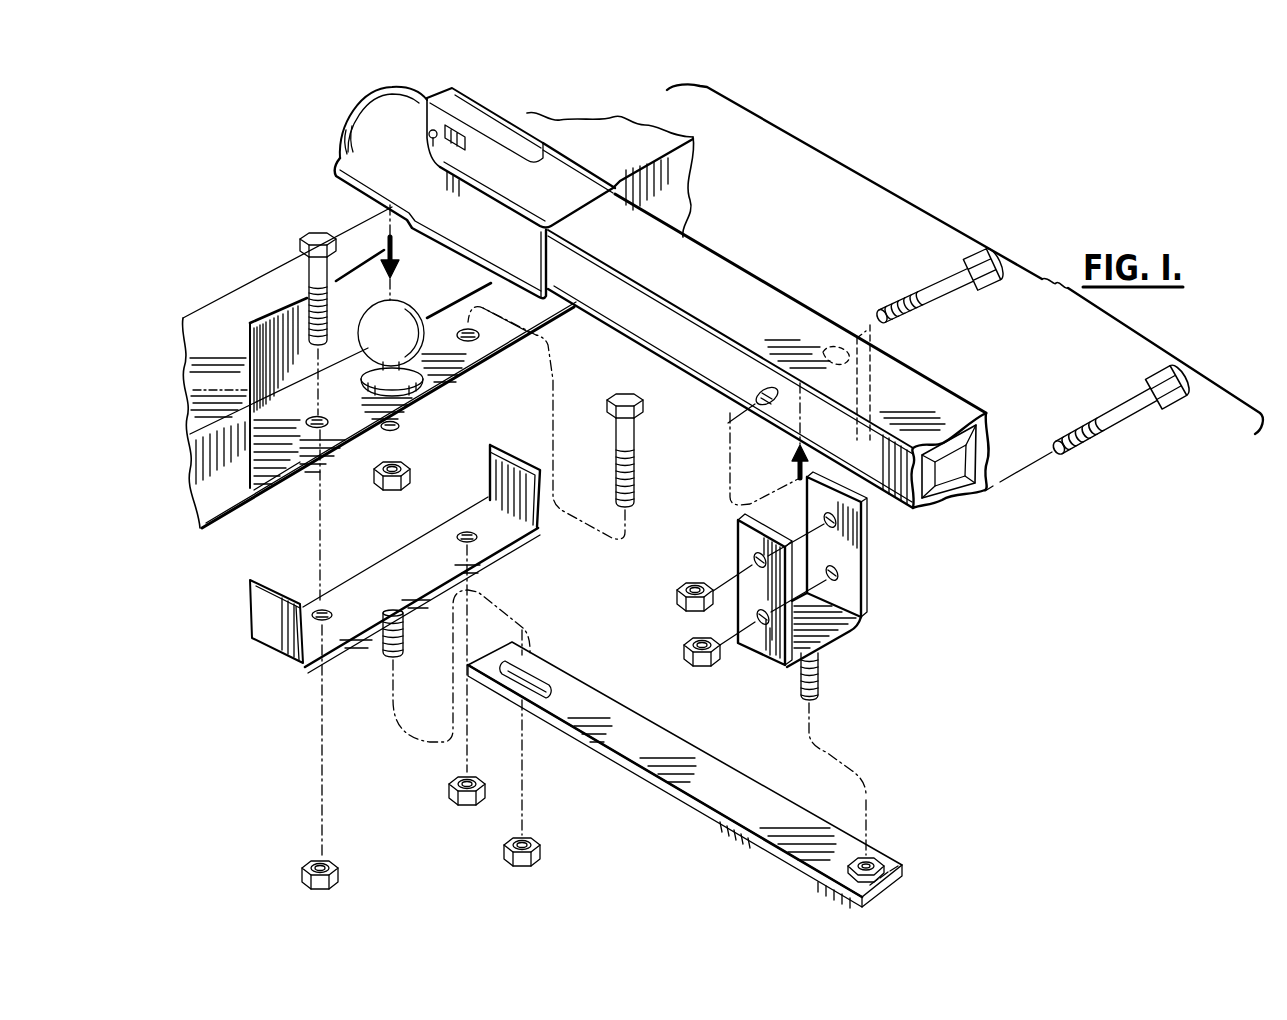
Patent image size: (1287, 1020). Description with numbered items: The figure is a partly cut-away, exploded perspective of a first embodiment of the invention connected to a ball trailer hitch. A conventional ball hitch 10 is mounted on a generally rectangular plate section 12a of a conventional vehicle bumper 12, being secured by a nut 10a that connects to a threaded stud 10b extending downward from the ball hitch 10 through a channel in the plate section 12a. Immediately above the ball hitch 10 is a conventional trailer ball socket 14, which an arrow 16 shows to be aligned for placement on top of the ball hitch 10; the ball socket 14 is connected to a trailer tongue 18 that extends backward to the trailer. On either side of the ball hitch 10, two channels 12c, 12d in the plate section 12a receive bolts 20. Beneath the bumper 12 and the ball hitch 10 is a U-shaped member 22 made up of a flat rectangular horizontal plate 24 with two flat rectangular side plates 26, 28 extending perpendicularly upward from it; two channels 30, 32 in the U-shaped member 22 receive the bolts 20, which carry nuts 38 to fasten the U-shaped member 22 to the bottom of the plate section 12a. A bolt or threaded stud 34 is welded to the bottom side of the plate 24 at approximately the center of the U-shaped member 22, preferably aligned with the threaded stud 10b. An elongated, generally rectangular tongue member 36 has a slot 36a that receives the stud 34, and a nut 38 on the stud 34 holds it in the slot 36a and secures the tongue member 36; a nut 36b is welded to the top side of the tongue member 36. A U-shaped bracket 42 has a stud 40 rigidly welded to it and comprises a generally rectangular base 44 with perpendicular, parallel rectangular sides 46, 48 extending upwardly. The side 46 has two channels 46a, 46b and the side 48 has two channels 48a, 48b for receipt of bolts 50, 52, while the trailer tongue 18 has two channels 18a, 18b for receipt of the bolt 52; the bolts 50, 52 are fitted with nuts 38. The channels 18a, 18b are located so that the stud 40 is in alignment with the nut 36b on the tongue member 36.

The ball hitch 10 is at (412, 300).
The nut 10a is at (394, 490).
The threaded stud 10b is at (399, 428).
The vehicle bumper 12 is at (224, 292).
The rectangular plate section 12a is at (287, 467).
The channel 12c is at (327, 426).
The channel 12d is at (472, 341).
The trailer ball socket 14 is at (343, 112).
The arrow 16 is at (383, 272).
The trailer tongue 18 is at (763, 300).
The channel 18a is at (760, 388).
The channel 18b is at (832, 344).
The bolt 20 is at (306, 293).
The U-shaped member 22 is at (368, 628).
The horizontal plate 24 is at (400, 595).
The side plate 26 is at (263, 608).
The side plate 28 is at (532, 450).
The channel 30 is at (326, 607).
The channel 32 is at (478, 542).
The threaded stud 34 is at (403, 625).
The tongue member 36 is at (740, 772).
The slot 36a is at (540, 690).
The nut 36b is at (870, 858).
The nut 38 is at (338, 870).
The stud 40 is at (820, 672).
The U-shaped bracket 42 is at (802, 544).
The base 44 is at (845, 632).
The side 46 is at (860, 528).
The channel 46a is at (822, 518).
The channel 46b is at (842, 576).
The side 48 is at (740, 540).
The channel 48a is at (736, 561).
The channel 48b is at (760, 640).
The bolt 50 is at (937, 294).
The bolt 52 is at (1120, 415).